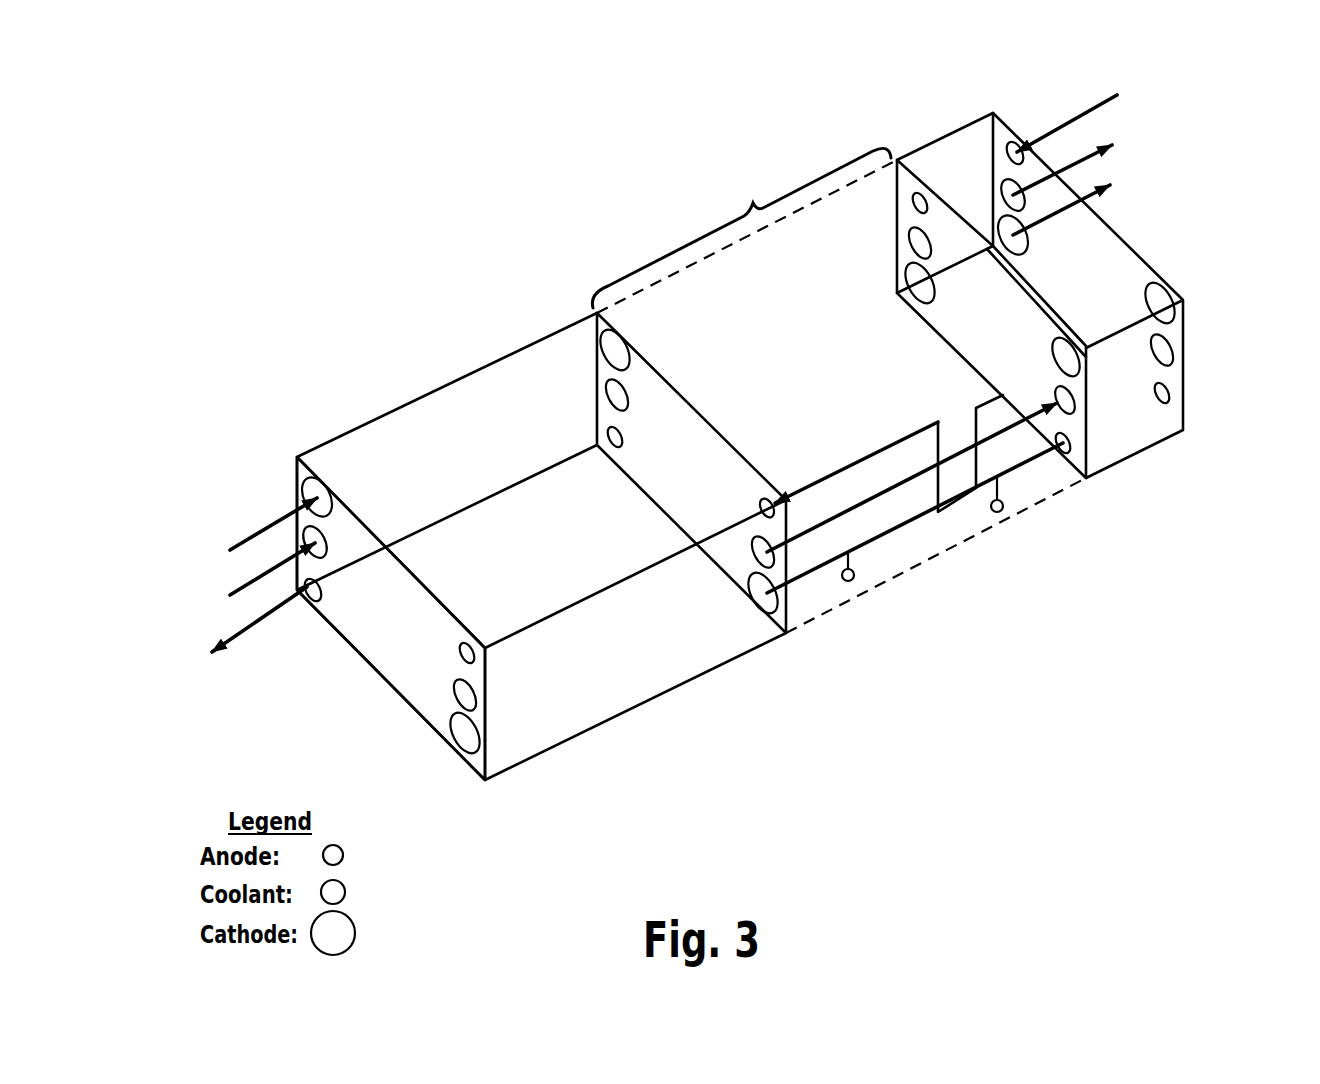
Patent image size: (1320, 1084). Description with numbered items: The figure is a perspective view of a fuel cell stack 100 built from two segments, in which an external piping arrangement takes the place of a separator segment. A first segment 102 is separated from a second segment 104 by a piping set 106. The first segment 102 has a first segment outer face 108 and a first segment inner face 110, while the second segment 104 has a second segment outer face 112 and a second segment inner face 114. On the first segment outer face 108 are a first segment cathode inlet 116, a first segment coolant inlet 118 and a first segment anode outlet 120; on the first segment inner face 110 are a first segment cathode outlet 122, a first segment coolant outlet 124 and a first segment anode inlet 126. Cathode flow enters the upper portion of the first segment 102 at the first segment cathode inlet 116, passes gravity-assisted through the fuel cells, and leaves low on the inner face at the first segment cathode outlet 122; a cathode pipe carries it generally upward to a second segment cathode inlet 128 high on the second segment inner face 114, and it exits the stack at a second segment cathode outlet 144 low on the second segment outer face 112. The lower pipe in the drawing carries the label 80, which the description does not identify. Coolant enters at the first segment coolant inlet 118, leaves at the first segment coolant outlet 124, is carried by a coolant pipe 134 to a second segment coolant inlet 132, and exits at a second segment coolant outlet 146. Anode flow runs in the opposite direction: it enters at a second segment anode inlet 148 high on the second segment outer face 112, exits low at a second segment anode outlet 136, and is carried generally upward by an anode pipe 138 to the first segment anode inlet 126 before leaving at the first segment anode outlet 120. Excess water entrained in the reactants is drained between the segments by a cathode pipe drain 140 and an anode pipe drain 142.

The coolant conduit 80 is at (900, 530).
The fuel cell stack 100 is at (605, 215).
The first segment 102 is at (377, 457).
The second segment 104 is at (930, 167).
The piping set 106 is at (839, 390).
The first segment outer face 108 is at (387, 645).
The first segment inner face 110 is at (735, 448).
The second segment outer face 112 is at (1130, 245).
The second segment inner face 114 is at (968, 332).
The first segment cathode inlet 116 is at (307, 482).
The first segment coolant inlet 118 is at (307, 540).
The first segment anode outlet 120 is at (315, 600).
The first segment cathode outlet 122 is at (762, 593).
The first segment coolant outlet 124 is at (765, 552).
The first segment anode inlet 126 is at (762, 503).
The second segment cathode inlet 128 is at (1057, 348).
The second segment coolant inlet 132 is at (1087, 425).
The coolant pipe 134 is at (958, 452).
The second segment anode outlet 136 is at (1068, 450).
The anode pipe 138 is at (883, 452).
The cathode pipe drain 140 is at (855, 581).
The anode pipe drain 142 is at (1003, 512).
The second segment cathode outlet 144 is at (1023, 248).
The second segment coolant outlet 146 is at (1003, 183).
The second segment anode inlet 148 is at (1010, 145).